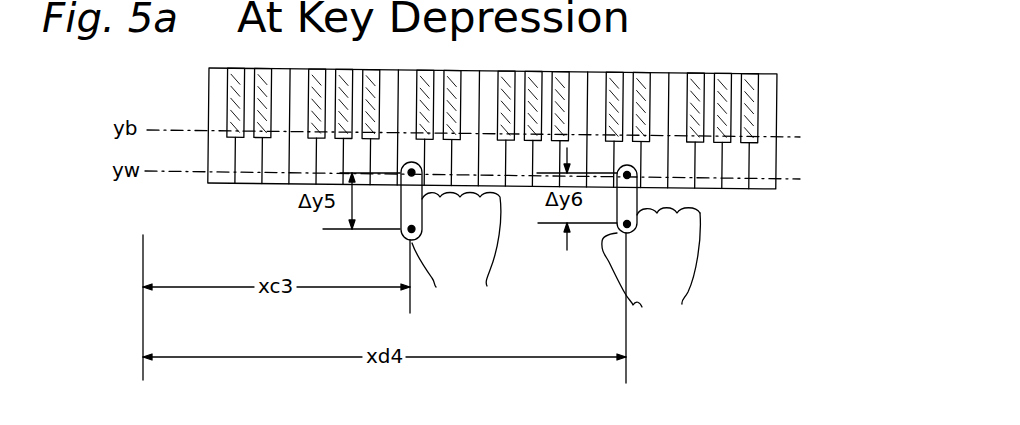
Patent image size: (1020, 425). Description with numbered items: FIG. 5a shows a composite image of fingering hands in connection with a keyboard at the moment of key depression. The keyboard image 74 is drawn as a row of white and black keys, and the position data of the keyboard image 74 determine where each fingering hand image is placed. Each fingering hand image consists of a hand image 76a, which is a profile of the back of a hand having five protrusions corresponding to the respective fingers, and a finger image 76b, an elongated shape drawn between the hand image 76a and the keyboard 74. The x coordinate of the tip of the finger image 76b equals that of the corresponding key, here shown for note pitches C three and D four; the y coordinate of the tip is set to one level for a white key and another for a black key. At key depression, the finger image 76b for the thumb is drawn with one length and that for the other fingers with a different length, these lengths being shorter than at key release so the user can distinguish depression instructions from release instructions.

The keyboard image 74 is at (777, 132).
The hand image portion 76a is at (697, 260).
The finger image portion 76b is at (640, 200).